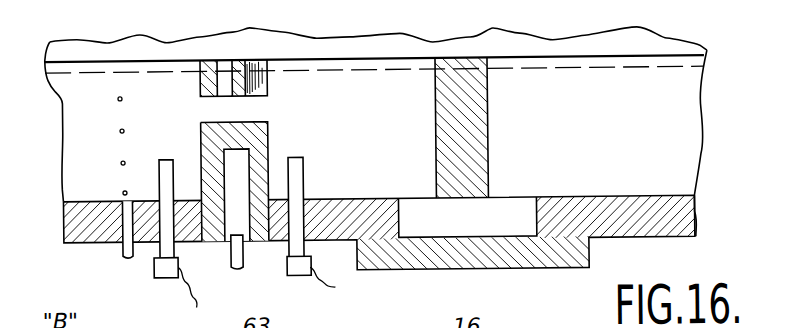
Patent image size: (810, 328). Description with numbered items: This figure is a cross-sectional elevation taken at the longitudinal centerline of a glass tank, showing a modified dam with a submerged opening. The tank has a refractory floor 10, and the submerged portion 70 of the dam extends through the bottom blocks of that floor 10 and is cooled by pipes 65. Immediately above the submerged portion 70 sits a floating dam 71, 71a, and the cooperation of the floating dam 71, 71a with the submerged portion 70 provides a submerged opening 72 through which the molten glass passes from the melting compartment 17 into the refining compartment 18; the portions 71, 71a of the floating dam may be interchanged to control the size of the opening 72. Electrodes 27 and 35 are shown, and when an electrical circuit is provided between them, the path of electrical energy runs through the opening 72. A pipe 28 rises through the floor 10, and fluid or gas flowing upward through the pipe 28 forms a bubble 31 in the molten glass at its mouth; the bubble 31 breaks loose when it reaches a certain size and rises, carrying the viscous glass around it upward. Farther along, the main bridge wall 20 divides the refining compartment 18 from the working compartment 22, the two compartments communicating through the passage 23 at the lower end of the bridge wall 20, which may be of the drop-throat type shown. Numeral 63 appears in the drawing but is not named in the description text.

The floor 10 is at (70, 228).
The melting compartment 17 is at (137, 86).
The refining compartment 18 is at (388, 143).
The main bridge wall 20 is at (473, 119).
The working compartment 22 is at (648, 132).
The passage 23 is at (509, 210).
The electrode 27 is at (153, 276).
The pipe 28 is at (123, 253).
The bubble 31 is at (117, 133).
The electrode 35 is at (333, 291).
The slot 63 is at (231, 165).
The pipes 65 is at (235, 265).
The submerged portion 70 is at (257, 135).
The floating dam 71 is at (205, 64).
The floating dam portion 71a is at (257, 74).
The submerged opening 72 is at (243, 109).